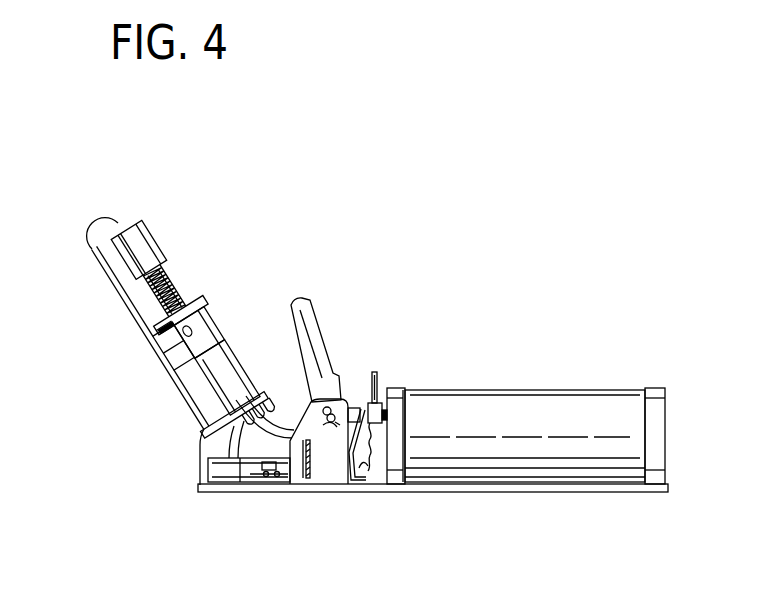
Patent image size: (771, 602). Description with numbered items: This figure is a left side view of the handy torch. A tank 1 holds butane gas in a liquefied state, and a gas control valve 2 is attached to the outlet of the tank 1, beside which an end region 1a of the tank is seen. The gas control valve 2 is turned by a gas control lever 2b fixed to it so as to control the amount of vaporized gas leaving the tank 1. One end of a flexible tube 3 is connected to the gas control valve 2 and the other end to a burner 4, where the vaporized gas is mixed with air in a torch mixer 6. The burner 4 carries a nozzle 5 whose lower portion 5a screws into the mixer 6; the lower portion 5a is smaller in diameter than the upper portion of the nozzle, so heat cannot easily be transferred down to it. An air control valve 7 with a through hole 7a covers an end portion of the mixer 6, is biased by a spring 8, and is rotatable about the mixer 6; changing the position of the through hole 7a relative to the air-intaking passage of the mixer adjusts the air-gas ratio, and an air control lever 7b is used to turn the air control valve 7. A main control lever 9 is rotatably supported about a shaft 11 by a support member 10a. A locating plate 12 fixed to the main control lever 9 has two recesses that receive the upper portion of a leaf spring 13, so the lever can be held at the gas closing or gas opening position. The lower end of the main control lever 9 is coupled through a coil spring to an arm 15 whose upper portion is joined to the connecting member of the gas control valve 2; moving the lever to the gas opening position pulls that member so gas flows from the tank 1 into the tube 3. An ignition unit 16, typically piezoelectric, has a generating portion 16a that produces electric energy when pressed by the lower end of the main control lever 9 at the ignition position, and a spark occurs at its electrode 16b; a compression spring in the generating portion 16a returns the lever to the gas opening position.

The tank 1 is at (551, 392).
The cylinder end cap 1a is at (392, 410).
The gas control valve 2 is at (383, 405).
The gas control lever 2b is at (375, 370).
The flexible tube 3 is at (276, 427).
The burner 4 is at (132, 213).
The nozzle 5 is at (150, 234).
The nozzle lower portion 5a is at (178, 291).
The torch mixer 6 is at (230, 364).
The air control valve 7 is at (210, 333).
The through hole 7a is at (200, 308).
The air control lever 7b is at (156, 333).
The spring 8 is at (173, 272).
The main control lever 9 is at (297, 299).
The support member 10a is at (310, 480).
The shaft 11 is at (334, 409).
The locating plate 12 is at (362, 472).
The leaf spring 13 is at (368, 458).
The arm 15 is at (362, 412).
The ignition unit 16 is at (162, 385).
The generating portion 16a is at (246, 482).
The electrode 16b is at (100, 226).